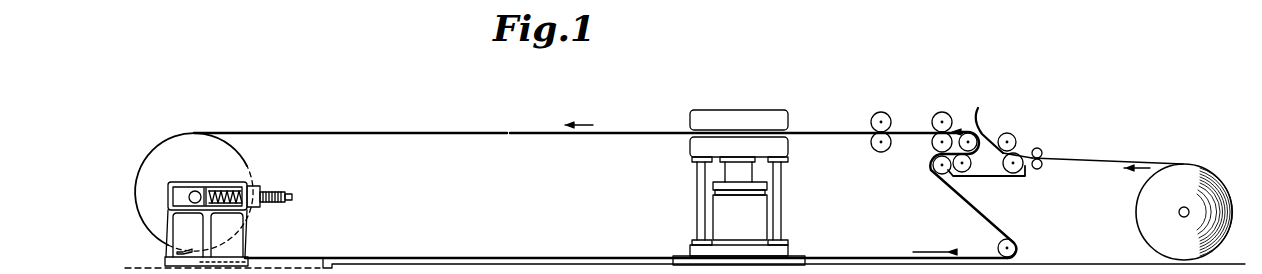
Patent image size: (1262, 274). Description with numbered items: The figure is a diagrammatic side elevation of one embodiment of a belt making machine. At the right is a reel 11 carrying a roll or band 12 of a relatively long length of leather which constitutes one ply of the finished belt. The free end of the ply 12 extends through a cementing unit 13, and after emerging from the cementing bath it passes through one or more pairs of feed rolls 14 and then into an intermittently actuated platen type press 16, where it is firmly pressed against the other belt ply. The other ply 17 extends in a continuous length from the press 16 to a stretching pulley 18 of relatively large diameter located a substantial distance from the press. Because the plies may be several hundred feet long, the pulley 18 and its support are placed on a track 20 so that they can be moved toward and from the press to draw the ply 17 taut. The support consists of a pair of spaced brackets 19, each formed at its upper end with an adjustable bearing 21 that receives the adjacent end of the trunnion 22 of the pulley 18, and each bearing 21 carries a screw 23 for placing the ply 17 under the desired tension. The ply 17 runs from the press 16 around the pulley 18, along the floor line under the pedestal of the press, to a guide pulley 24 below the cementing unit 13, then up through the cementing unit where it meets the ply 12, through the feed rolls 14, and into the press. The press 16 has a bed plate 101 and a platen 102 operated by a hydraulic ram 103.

The reel 11 is at (1222, 206).
The ply 12 is at (1145, 146).
The cementing unit 13 is at (1000, 126).
The feed rolls 14 is at (883, 110).
The press 16 is at (739, 169).
The ply 17 is at (546, 134).
The stretching pulley 18 is at (255, 163).
The brackets 19 is at (240, 252).
The track 20 is at (329, 250).
The adjustable bearing 21 is at (194, 190).
The trunnion 22 is at (205, 187).
The screw 23 is at (278, 192).
The guide pulley 24 is at (1017, 247).
The bed plate 101 is at (739, 120).
The platen 102 is at (739, 147).
The hydraulic ram 103 is at (740, 211).